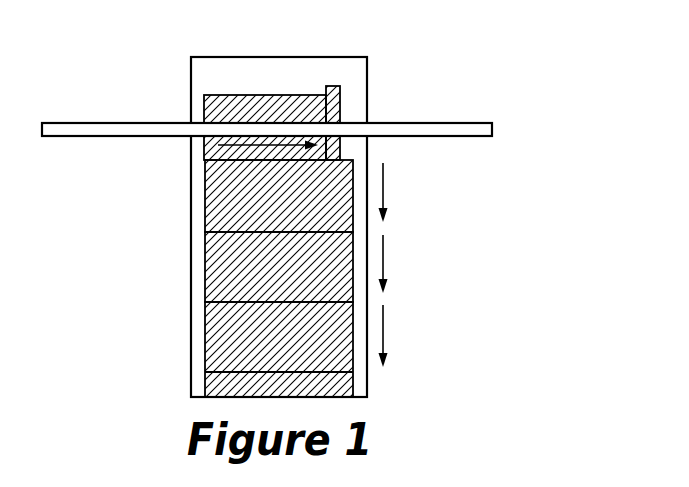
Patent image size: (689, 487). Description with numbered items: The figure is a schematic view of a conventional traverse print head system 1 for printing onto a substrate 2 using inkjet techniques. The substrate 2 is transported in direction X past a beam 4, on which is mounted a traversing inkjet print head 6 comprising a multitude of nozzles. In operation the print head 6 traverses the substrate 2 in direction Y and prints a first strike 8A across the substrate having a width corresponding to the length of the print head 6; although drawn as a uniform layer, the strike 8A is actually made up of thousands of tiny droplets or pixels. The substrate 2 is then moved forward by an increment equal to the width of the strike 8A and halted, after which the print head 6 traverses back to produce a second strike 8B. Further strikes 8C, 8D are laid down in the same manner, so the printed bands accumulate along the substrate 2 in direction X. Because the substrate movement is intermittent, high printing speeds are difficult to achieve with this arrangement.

The traverse print head system 1 is at (309, 199).
The substrate 2 is at (367, 72).
The beam 4 is at (437, 136).
The traversing inkjet print head 6 is at (327, 105).
The first strike 8A is at (218, 338).
The second strike 8B is at (218, 266).
The further strike 8C is at (218, 200).
The further strike 8D is at (218, 152).